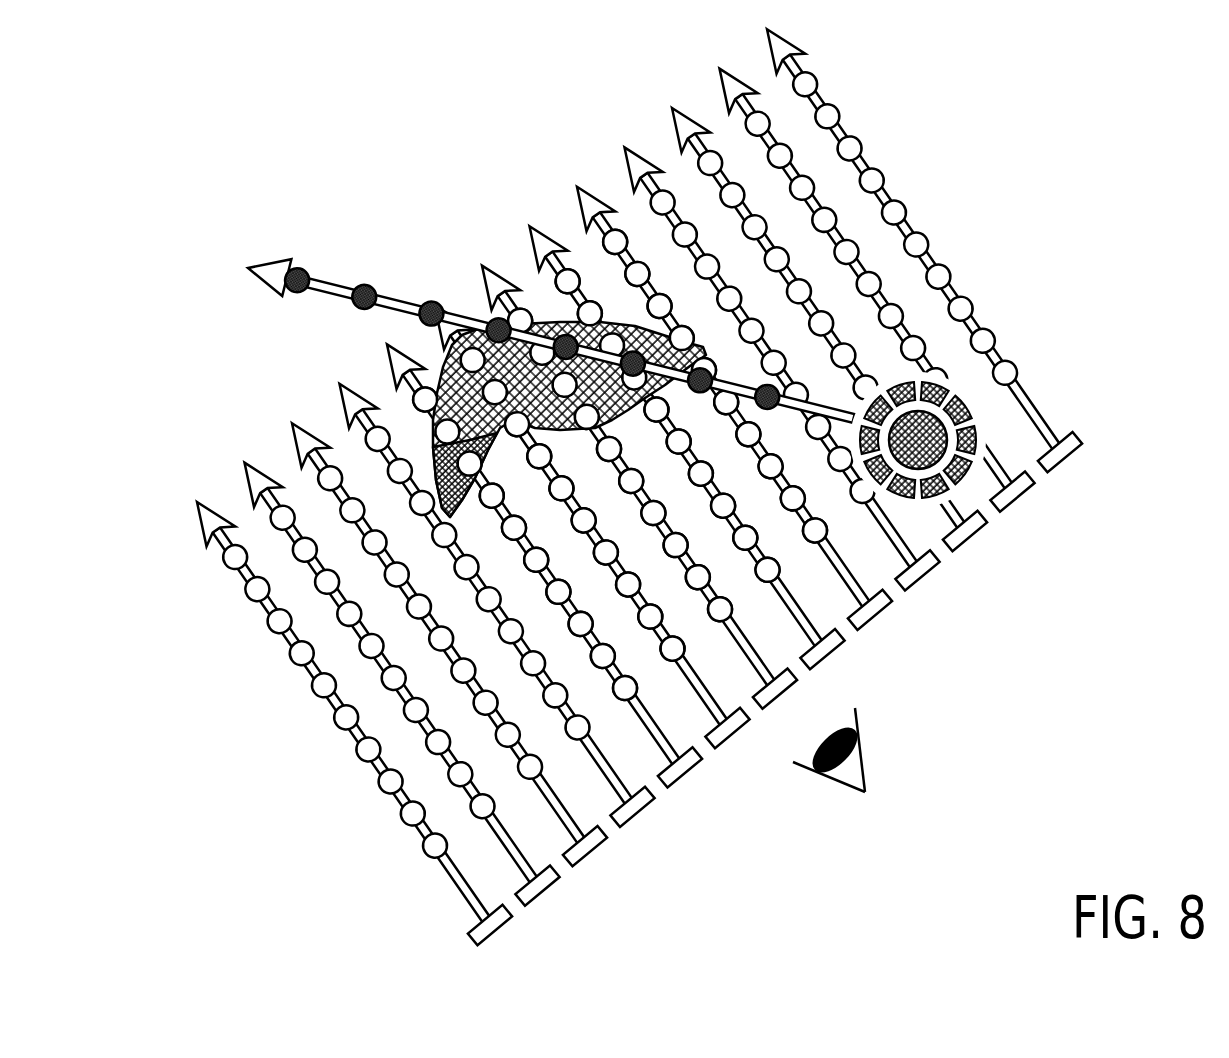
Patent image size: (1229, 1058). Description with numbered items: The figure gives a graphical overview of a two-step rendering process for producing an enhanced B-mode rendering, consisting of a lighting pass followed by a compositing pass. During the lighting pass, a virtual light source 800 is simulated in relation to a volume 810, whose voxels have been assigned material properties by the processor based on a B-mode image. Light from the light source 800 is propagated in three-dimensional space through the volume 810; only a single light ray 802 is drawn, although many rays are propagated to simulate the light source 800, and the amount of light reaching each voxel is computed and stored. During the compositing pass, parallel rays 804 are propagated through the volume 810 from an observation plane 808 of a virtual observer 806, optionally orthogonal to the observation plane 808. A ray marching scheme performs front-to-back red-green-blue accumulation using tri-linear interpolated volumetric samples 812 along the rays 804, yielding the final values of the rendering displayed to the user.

The virtual light source 800 is at (927, 423).
The light ray 802 is at (330, 275).
The parallel rays 804 is at (723, 87).
The virtual observer 806 is at (866, 762).
The observation plane 808 is at (1068, 423).
The volume 810 is at (450, 396).
The volumetric samples 812 is at (445, 437).